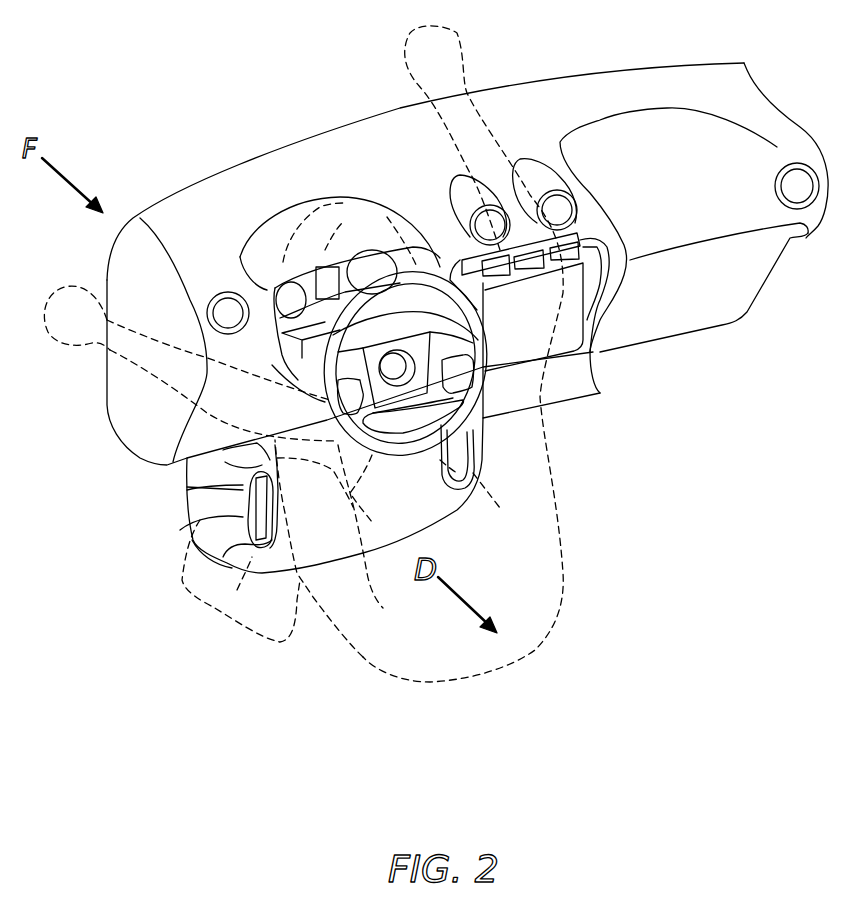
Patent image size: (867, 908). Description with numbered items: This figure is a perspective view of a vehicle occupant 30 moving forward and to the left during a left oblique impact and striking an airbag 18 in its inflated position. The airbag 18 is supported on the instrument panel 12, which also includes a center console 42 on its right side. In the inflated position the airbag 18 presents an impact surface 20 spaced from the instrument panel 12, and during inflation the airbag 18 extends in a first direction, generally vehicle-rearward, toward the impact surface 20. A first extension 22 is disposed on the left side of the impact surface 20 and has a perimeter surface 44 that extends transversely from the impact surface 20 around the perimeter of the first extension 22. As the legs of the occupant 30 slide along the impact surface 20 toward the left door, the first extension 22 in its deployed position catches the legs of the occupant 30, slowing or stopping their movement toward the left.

The instrument panel 12 is at (107, 393).
The center console 42 is at (450, 243).
The impact surface 20 is at (187, 460).
The perimeter surface 44 is at (187, 490).
The airbag 18 is at (180, 530).
The first extension 22 is at (190, 550).
The occupant 30 is at (313, 722).